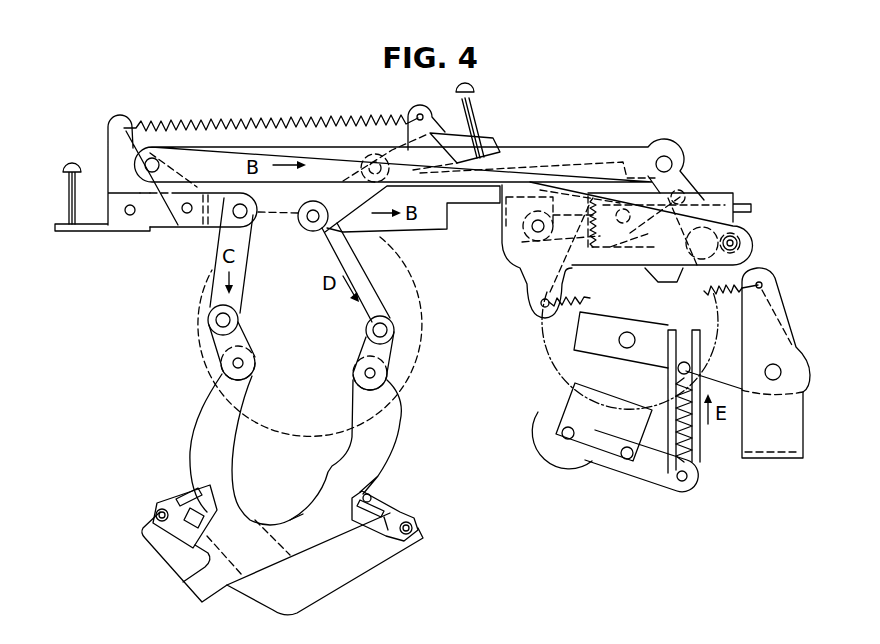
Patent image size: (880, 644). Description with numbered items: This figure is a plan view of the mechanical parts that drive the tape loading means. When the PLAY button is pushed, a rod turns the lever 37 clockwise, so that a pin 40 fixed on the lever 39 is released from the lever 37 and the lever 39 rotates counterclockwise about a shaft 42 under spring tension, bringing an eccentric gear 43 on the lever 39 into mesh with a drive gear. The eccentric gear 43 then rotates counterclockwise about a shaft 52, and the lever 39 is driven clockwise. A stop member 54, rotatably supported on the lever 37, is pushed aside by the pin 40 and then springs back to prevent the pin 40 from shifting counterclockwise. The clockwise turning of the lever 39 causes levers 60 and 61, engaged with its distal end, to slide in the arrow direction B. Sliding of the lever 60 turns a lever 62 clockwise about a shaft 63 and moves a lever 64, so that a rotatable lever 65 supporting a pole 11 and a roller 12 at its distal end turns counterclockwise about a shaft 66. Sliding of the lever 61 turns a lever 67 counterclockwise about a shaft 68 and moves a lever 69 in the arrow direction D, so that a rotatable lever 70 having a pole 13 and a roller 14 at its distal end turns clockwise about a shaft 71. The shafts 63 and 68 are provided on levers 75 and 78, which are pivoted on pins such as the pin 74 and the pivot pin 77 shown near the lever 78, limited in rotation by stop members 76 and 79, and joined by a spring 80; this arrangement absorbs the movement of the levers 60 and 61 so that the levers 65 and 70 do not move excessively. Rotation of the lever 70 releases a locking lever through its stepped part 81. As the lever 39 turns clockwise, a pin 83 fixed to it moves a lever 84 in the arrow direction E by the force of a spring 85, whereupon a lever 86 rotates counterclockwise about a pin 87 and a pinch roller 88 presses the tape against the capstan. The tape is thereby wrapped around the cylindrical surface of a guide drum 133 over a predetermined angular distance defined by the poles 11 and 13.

The pole 11 is at (385, 499).
The roller 12 is at (414, 524).
The pole 13 is at (186, 496).
The roller 14 is at (158, 513).
The lever 37 is at (502, 228).
The lever 39 is at (748, 266).
The pin 40 is at (745, 238).
The shaft 42 is at (773, 381).
The eccentric gear 43 is at (545, 333).
The shaft 52 is at (627, 332).
The stop member 54 is at (717, 193).
The lever 60 is at (558, 146).
The lever 61 is at (432, 230).
The lever 62 is at (210, 226).
The shaft 63 is at (185, 213).
The lever 64 is at (212, 270).
The rotatable lever 65 is at (197, 433).
The shaft 66 is at (244, 363).
The lever 67 is at (301, 212).
The shaft 68 is at (362, 167).
The lever 69 is at (392, 305).
The rotatable lever 70 is at (401, 424).
The shaft 71 is at (376, 373).
The pin 74 is at (130, 216).
The lever 75 is at (92, 231).
The stop member 76 is at (72, 165).
The lug 77 is at (425, 106).
The lever 78 is at (497, 136).
The stop member 79 is at (476, 100).
The spring 80 is at (250, 122).
The stepped part 81 is at (183, 582).
The pin 83 is at (681, 358).
The lever 84 is at (696, 468).
The spring 85 is at (690, 448).
The lever 86 is at (658, 490).
The pin 87 is at (622, 460).
The pinch roller 88 is at (537, 440).
The guide drum 133 is at (192, 345).